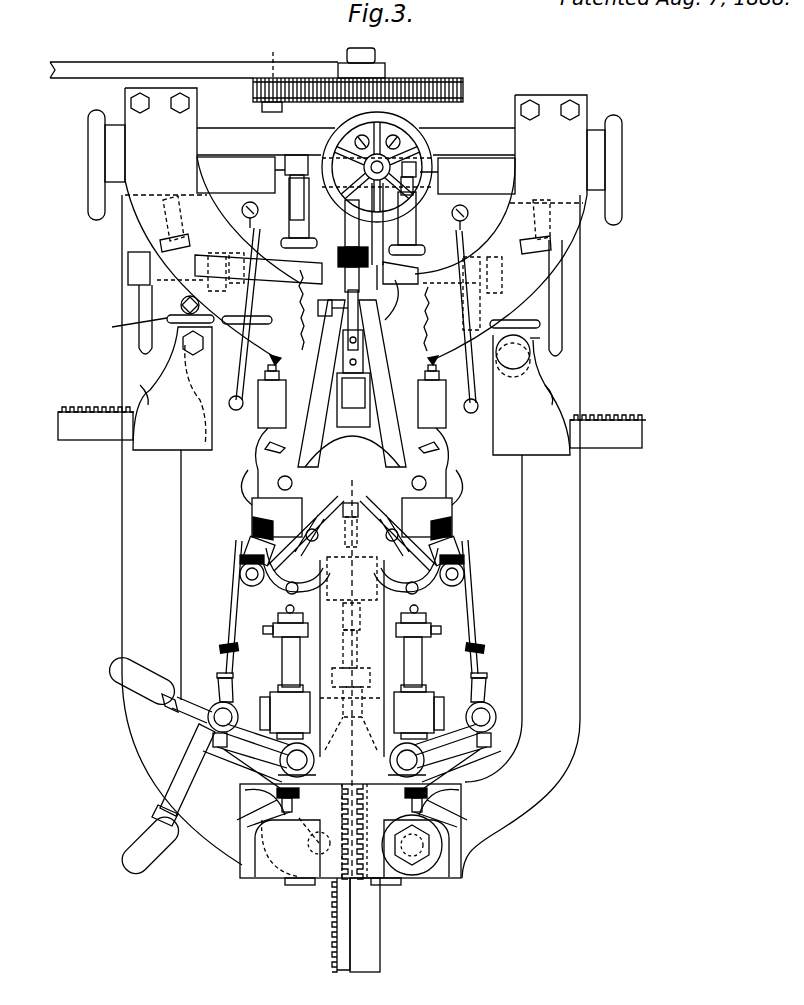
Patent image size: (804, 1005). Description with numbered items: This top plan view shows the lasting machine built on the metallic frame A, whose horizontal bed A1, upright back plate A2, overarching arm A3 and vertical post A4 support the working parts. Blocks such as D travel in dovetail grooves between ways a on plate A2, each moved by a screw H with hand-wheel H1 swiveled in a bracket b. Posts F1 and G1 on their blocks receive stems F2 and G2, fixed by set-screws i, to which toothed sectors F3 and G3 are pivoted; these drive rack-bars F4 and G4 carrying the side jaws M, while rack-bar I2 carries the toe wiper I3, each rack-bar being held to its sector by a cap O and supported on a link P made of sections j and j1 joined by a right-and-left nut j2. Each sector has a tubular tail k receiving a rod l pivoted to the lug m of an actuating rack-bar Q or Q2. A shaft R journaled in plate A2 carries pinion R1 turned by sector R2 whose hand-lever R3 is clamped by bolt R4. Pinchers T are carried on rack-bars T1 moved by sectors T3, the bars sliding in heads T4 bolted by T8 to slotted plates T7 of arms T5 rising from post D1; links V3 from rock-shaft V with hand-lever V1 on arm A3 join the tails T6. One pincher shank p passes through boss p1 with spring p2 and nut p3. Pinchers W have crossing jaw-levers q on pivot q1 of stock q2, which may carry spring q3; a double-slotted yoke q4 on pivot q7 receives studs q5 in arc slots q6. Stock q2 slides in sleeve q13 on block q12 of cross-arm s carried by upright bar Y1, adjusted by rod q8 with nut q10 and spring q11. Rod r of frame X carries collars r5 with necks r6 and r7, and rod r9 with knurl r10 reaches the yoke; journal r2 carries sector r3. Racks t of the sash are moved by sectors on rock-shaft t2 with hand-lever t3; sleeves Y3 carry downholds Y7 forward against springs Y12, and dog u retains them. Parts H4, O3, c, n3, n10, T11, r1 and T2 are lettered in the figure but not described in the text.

The hand-lever R3 is at (194, 58).
The short shaft R is at (376, 51).
The pinion R1 is at (395, 75).
The toothed sector R2 is at (463, 100).
The clamping-bolt R4 is at (276, 62).
The overarching arm A3 is at (356, 224).
The left handle H4 is at (88, 154).
The bracket b is at (360, 137).
The hand-wheel H1 is at (622, 160).
The upright back plate A2 is at (356, 141).
The ribs or ways a is at (278, 158).
The bearing block O3 is at (276, 186).
The screw H is at (345, 160).
The actuating rack-bar Q is at (296, 165).
The actuating rack-bar Q2 is at (409, 169).
The lug m is at (290, 196).
The rod l is at (309, 208).
The block D is at (338, 225).
The link section j is at (260, 226).
The post G1 is at (475, 218).
The post F1 is at (223, 213).
The gravitating dog u is at (354, 263).
The hand-lever V1 is at (130, 241).
The rock-shaft V is at (306, 269).
The nut or sleeve j2 is at (353, 246).
The post D1 is at (393, 300).
The swinging link P is at (355, 331).
The clamp c is at (326, 308).
The lever extension k is at (381, 310).
The rods or links V3 is at (352, 358).
The set-screw i is at (181, 305).
The stem F2 is at (153, 327).
The toothed sector F3 is at (140, 392).
The retaining cap O is at (351, 397).
The toothed rack-bar F4 is at (96, 423).
The toothed rack-bar G4 is at (608, 431).
The stem G2 is at (539, 344).
The toothed sector G3 is at (554, 387).
The link section j1 is at (351, 320).
The metallic frame A is at (182, 530).
The horizontal bed portion A1 is at (521, 536).
The standard or arm T5 is at (361, 383).
The rack-bar I2 is at (353, 400).
The side jaws M is at (352, 396).
The nut n3 is at (344, 368).
The slotted plate T7 is at (351, 378).
The bolt T8 is at (351, 439).
The supporting head or block T4 is at (351, 482).
The lever-extension T6 is at (262, 455).
The toothed sector T3 is at (272, 482).
The toe wiper or folder I3 is at (330, 470).
The pin n10 is at (356, 479).
The downhold Y7 is at (350, 680).
The sleeve Y3 is at (351, 653).
The rack-bar T1 is at (262, 522).
The pin T11 is at (350, 534).
The pinchers W is at (352, 533).
The boss p1 is at (350, 548).
The helical spring p2 is at (485, 546).
The nut p3 is at (343, 565).
The shank p is at (238, 578).
The jaw-levers q is at (342, 520).
The pivot-pin q1 is at (350, 546).
The stock or bar q2 is at (410, 667).
The pin or stud q5 is at (350, 566).
The slots q6 is at (351, 586).
The double-slotted yoke q4 is at (349, 599).
The pivot-pin q7 is at (353, 611).
The spring q3 is at (303, 615).
The sleeve q13 is at (281, 690).
The slotted block q12 is at (345, 710).
The cross-arm s is at (353, 696).
The rod r9 is at (234, 622).
The boss or knurl r10 is at (224, 646).
The forwardly-extending neck r6 is at (350, 684).
The collar or hub r5 is at (348, 706).
The vertical rod r is at (233, 716).
The rearwardly-extending neck r7 is at (350, 724).
The toothed sector r3 is at (203, 753).
The upper journal r2 is at (170, 766).
The pin r1 is at (472, 745).
The pinchers T is at (281, 766).
The frame X is at (352, 800).
The pivot T2 is at (348, 760).
The hand-lever t3 is at (315, 781).
The helical spring q11 is at (440, 778).
The nut q10 is at (432, 800).
The rod q8 is at (300, 826).
The vertical post or standard A4 is at (412, 847).
The vertical rock-shaft t2 is at (312, 850).
The slotted upright bar Y1 is at (330, 855).
The springs Y12 is at (340, 912).
The toothed racks t is at (352, 938).